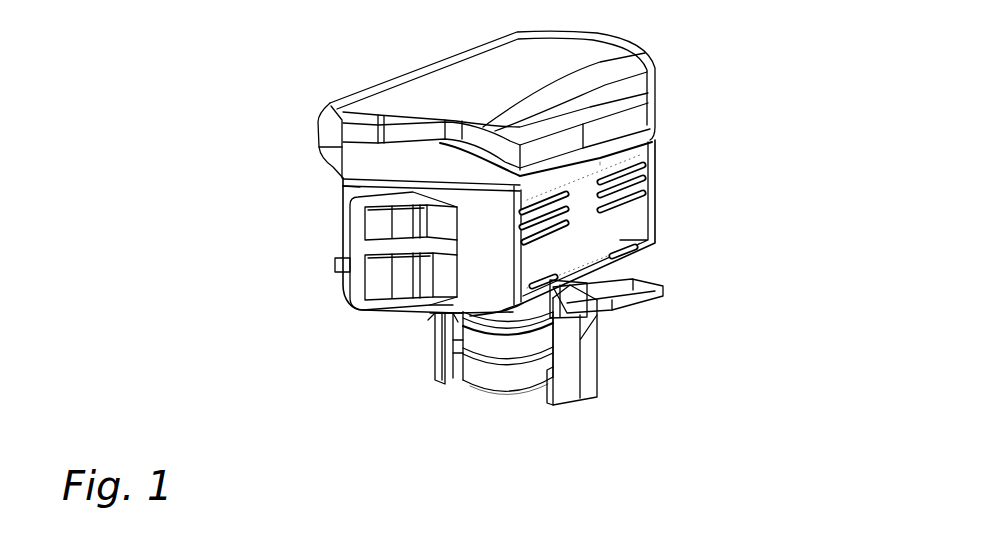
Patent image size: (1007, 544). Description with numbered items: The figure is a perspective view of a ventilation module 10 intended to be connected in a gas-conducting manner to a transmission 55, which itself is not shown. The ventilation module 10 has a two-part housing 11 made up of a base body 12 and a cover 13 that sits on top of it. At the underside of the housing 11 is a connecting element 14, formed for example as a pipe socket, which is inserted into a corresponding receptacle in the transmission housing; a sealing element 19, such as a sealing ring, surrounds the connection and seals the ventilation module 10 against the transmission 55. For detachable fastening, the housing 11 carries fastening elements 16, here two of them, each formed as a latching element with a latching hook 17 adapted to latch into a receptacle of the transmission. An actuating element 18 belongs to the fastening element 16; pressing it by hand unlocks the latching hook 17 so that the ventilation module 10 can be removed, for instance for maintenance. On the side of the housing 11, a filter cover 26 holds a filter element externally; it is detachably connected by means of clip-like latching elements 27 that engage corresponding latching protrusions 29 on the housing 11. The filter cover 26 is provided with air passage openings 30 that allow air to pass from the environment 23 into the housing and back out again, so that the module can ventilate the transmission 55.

The ventilation module 10 is at (680, 367).
The housing 11 is at (662, 188).
The base body 12 is at (343, 190).
The cover 13 is at (652, 55).
The connecting element 14 is at (520, 402).
The fastening element 16 is at (427, 346).
The latching hook 17 is at (445, 355).
The actuating element 18 is at (633, 310).
The sealing element 19 is at (502, 342).
The environment 23 is at (748, 149).
The filter cover 26 is at (633, 217).
The latching elements 27 is at (358, 285).
The latching protrusions 29 is at (385, 268).
The air passage openings 30 is at (645, 178).
The transmission 55 is at (522, 484).